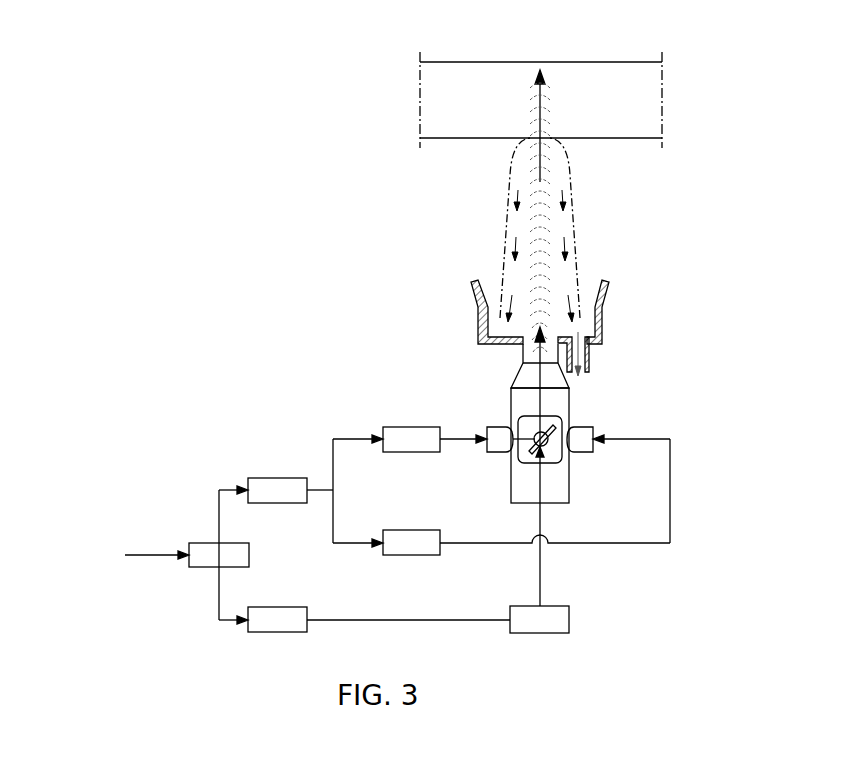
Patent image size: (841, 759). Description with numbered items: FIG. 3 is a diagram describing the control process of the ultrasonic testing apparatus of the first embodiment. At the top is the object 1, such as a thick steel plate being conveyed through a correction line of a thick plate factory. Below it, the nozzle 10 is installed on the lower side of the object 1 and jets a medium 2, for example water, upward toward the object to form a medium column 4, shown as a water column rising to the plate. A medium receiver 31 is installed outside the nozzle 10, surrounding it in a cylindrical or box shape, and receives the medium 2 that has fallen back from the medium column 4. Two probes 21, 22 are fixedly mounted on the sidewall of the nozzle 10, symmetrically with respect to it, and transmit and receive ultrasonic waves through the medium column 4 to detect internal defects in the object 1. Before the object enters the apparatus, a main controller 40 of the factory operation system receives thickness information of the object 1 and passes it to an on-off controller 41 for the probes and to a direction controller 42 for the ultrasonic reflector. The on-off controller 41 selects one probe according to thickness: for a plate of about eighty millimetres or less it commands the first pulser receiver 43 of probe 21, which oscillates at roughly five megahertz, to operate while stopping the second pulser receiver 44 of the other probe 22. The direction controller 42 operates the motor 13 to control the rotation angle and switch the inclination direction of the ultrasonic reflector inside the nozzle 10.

The object 1 is at (467, 78).
The medium 2 is at (566, 197).
The medium column 4 is at (512, 197).
The nozzle 10 is at (514, 380).
The motor 13 is at (548, 606).
The probe 21 is at (498, 427).
The probe 22 is at (586, 427).
The medium receiver 31 is at (600, 322).
The main controller 40 is at (229, 543).
The on-off controller for probe 41 is at (283, 478).
The direction controller for ultrasonic reflector 42 is at (283, 607).
The first pulser receiver 43 is at (418, 427).
The second pulser receiver 44 is at (418, 530).